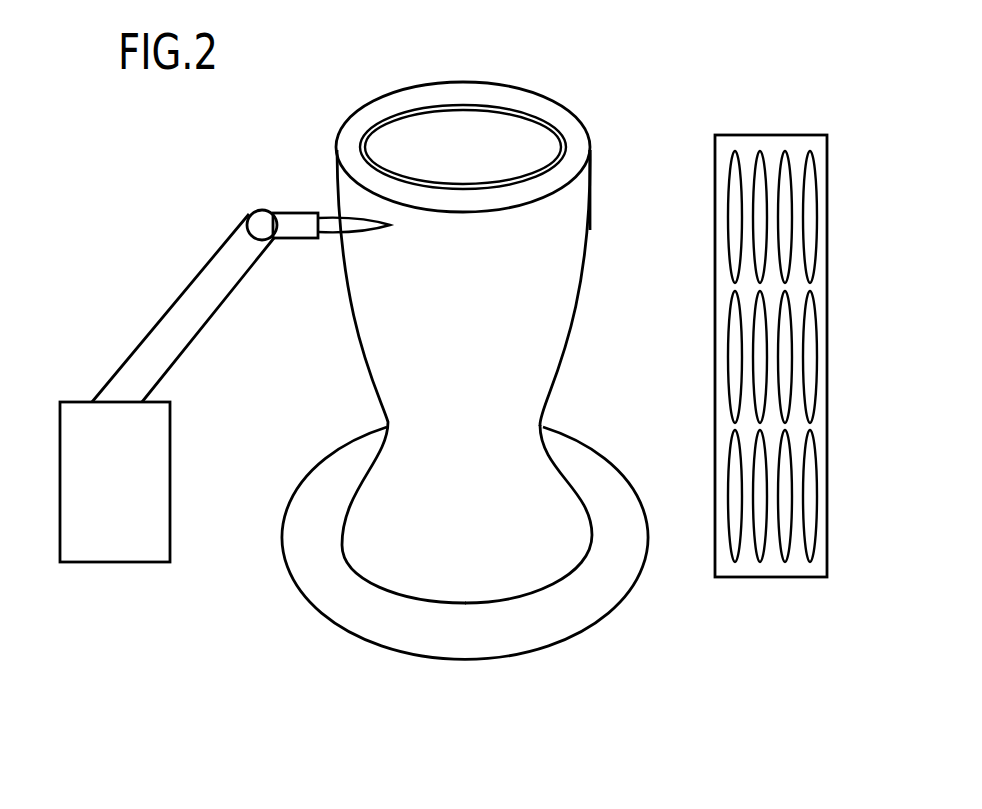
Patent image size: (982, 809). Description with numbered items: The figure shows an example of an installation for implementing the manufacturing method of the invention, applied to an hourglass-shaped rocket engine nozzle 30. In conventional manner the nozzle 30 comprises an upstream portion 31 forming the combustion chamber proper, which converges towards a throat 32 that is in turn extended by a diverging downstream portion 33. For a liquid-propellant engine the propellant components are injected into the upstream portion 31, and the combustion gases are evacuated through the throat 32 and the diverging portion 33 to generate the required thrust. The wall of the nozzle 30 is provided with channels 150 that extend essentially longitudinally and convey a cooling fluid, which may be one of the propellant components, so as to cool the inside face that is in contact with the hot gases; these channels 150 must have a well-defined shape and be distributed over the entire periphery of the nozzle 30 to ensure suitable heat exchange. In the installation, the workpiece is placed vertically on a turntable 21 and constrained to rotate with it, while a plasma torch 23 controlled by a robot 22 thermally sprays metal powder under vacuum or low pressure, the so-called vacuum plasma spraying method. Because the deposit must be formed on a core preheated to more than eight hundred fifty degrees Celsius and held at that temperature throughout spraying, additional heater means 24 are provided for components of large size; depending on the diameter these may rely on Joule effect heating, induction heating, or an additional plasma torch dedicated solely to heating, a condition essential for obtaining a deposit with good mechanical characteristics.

The channels 150 is at (523, 80).
The rocket engine nozzle 30 is at (592, 308).
The upstream portion 31 is at (578, 205).
The throat 32 is at (543, 410).
The diverging downstream portion 33 is at (548, 503).
The turntable 21 is at (307, 562).
The robot 22 is at (160, 483).
The plasma torch 23 is at (293, 222).
The additional heater means 24 is at (828, 297).